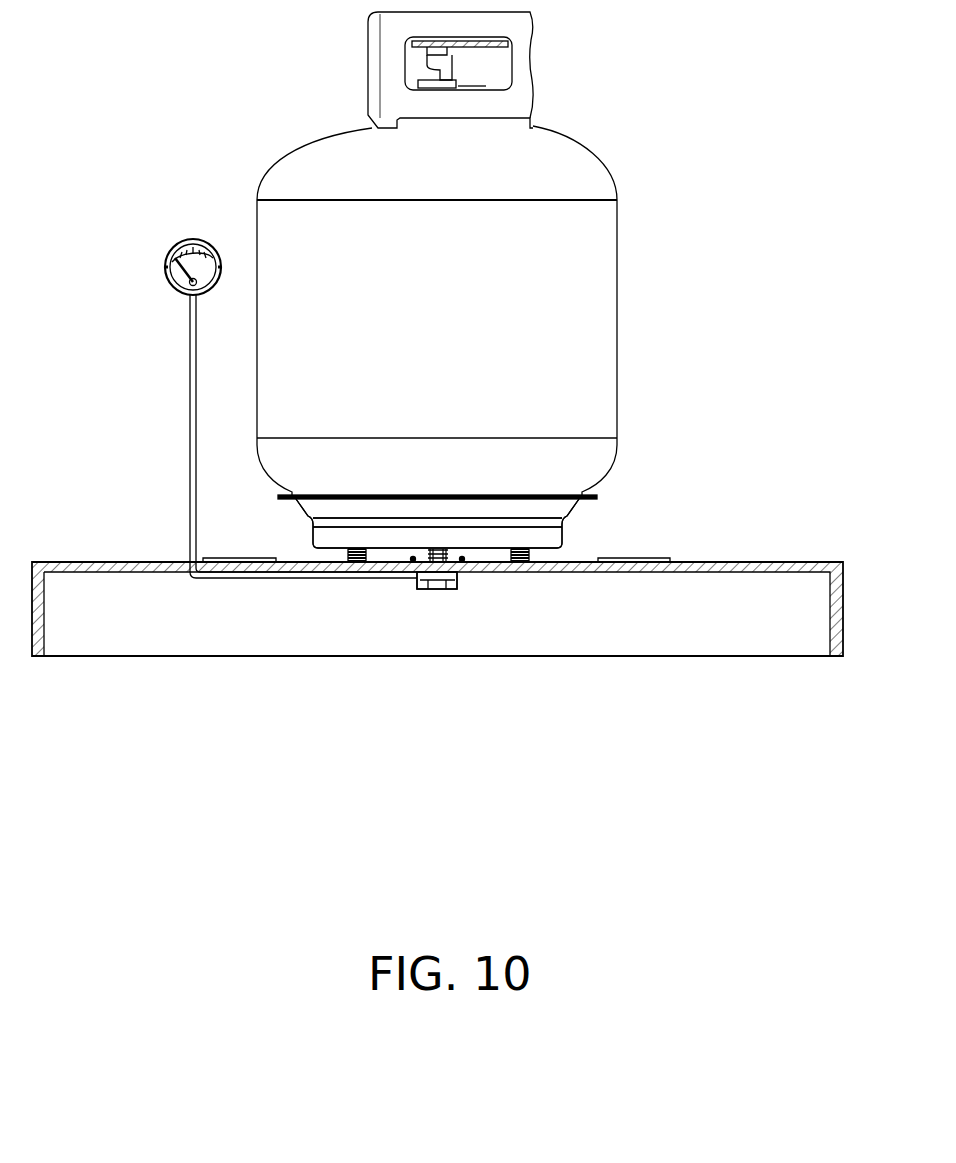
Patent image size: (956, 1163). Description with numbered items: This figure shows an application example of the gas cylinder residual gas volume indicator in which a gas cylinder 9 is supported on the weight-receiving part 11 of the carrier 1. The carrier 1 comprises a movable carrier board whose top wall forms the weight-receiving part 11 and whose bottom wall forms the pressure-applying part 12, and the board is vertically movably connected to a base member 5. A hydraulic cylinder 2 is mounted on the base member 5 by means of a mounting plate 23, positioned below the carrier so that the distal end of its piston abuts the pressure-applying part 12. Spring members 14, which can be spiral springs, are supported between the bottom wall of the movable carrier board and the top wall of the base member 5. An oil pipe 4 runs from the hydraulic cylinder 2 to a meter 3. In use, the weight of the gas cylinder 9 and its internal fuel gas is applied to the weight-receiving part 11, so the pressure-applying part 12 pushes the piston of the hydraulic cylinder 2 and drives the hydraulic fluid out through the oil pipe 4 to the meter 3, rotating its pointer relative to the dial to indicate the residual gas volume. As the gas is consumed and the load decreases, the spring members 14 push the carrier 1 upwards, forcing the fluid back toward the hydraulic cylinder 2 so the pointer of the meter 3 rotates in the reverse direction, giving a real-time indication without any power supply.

The carrier 1 is at (403, 512).
The hydraulic cylinder 2 is at (435, 590).
The mounting plate 23 is at (418, 586).
The meter 3 is at (171, 246).
The oil pipe 4 is at (188, 383).
The base member 5 is at (567, 657).
The gas cylinder 9 is at (552, 172).
The weight-receiving part 11 is at (470, 500).
The pressure-applying part 12 is at (490, 550).
The spring members 14 is at (355, 550).